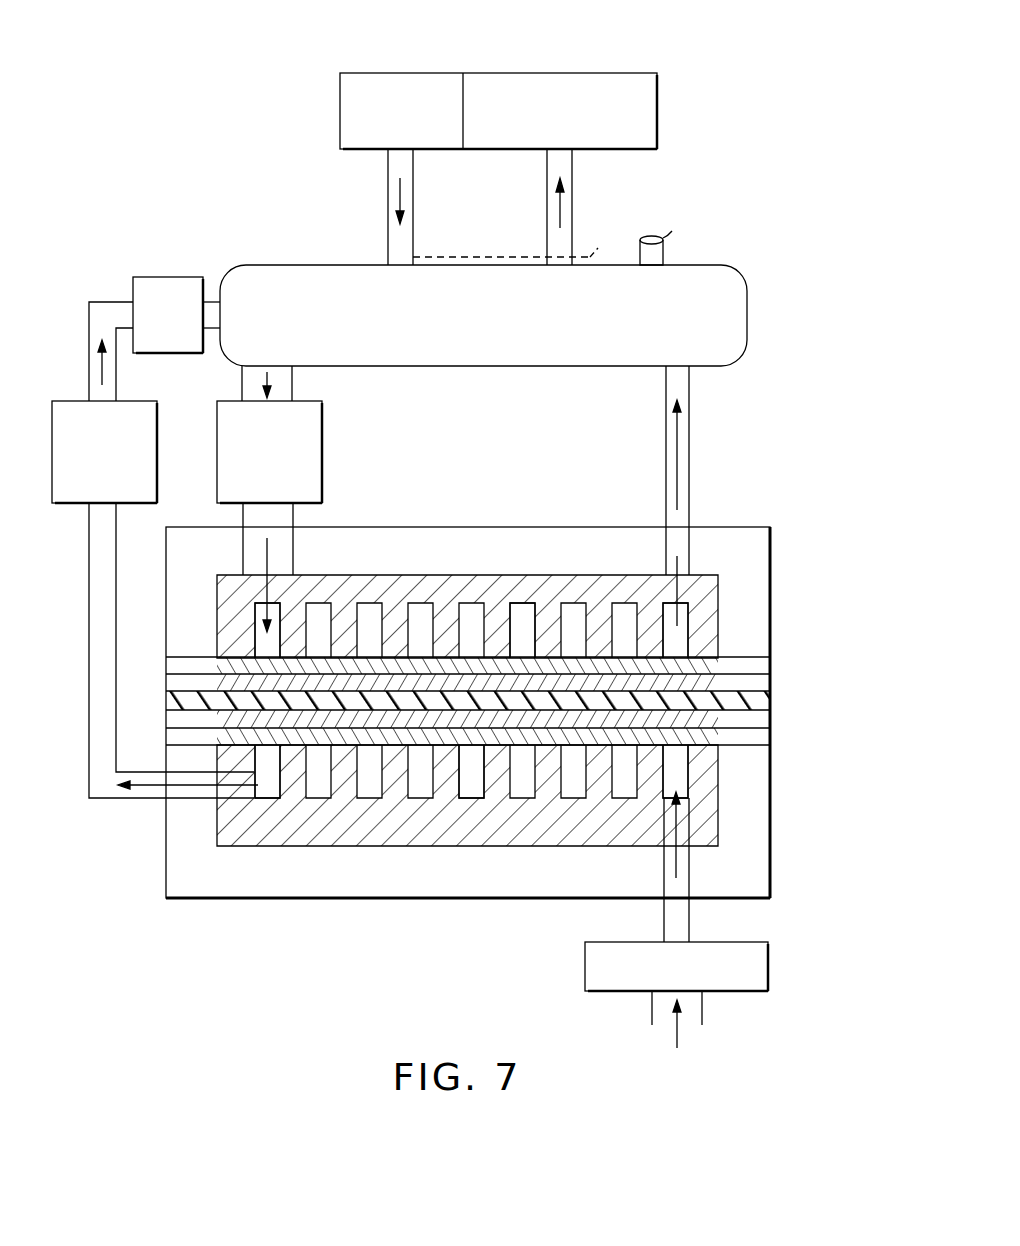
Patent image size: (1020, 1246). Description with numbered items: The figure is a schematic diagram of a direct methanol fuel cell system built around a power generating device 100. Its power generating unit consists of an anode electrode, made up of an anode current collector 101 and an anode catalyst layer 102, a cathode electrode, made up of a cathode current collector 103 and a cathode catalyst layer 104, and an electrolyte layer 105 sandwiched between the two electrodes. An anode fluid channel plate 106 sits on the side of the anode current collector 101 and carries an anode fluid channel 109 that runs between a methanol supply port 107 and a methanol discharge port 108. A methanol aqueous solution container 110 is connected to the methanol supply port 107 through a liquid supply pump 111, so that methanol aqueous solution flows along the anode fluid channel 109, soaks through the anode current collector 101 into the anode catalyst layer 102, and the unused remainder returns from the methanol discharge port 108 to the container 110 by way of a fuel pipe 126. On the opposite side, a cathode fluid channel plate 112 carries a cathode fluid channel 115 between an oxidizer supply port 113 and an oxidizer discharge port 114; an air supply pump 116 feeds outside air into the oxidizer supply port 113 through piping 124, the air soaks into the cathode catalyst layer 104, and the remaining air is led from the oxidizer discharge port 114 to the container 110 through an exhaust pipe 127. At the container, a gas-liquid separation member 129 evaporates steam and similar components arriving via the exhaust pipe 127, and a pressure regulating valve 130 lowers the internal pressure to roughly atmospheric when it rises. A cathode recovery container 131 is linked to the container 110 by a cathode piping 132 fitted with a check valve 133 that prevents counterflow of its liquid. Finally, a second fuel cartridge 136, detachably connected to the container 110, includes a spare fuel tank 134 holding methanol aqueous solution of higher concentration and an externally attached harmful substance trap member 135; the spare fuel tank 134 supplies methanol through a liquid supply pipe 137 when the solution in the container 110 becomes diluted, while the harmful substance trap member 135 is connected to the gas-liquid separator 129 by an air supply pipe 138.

The direct methanol fuel cell power generating device 100 is at (830, 605).
The anode current collector 101 is at (718, 666).
The anode catalyst layer 102 is at (718, 683).
The cathode current collector 103 is at (718, 735).
The cathode catalyst layer 104 is at (718, 720).
The electrolyte layer 105 is at (718, 700).
The anode fluid channel plate 106 is at (401, 566).
The methanol supply port 107 is at (279, 645).
The methanol discharge port 108 is at (677, 624).
The anode fluid channel 109 is at (515, 602).
The methanol aqueous solution container 110 is at (709, 265).
The liquid supply pump 111 is at (311, 401).
The cathode fluid channel plate 112 is at (380, 858).
The oxidizer supply port 113 is at (682, 782).
The oxidizer discharge port 114 is at (274, 776).
The cathode fluid channel 115 is at (482, 790).
The air supply pump 116 is at (720, 942).
The air supply pipe 124 is at (690, 870).
The fuel pipe 126 is at (690, 452).
The exhaust pipe 127 is at (126, 803).
The gas-liquid separation member 129 is at (518, 238).
The pressure regulating valve 130 is at (653, 236).
The cathode recovery container 131 is at (145, 401).
The cathode piping 132 is at (100, 301).
The check valve 133 is at (160, 277).
The spare fuel tank 134 is at (432, 73).
The harmful substance trap member 135 is at (520, 73).
The second fuel cartridge 136 is at (442, 42).
The liquid supply pipe 137 is at (388, 178).
The air supply pipe 138 is at (572, 178).